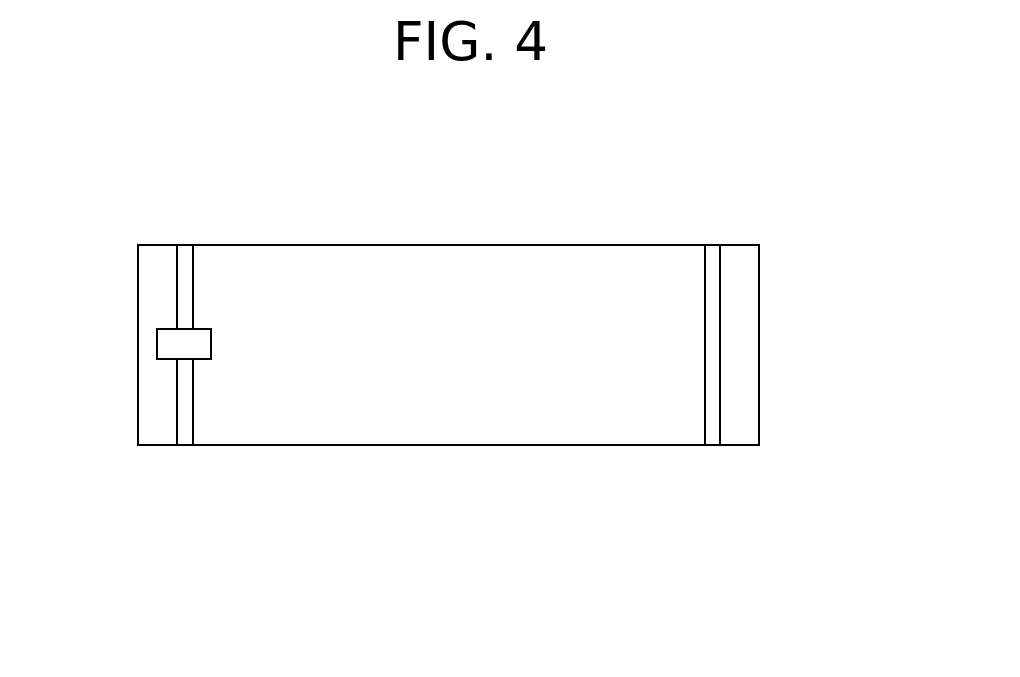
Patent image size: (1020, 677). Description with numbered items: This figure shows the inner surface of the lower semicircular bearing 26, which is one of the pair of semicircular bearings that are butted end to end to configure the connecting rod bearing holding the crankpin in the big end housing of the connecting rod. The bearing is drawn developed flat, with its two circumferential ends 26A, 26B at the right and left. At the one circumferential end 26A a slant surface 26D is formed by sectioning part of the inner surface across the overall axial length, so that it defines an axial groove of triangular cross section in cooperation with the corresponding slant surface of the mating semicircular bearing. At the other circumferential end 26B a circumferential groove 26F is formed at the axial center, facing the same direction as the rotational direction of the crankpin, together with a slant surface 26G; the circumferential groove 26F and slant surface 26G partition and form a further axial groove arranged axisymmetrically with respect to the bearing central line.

The semicircular bearing 26 is at (466, 361).
The circumferential end 26A is at (753, 410).
The circumferential end 26B is at (145, 396).
The slant surface 26D is at (713, 438).
The circumferential groove 26F is at (198, 345).
The slant surface 26G is at (183, 445).